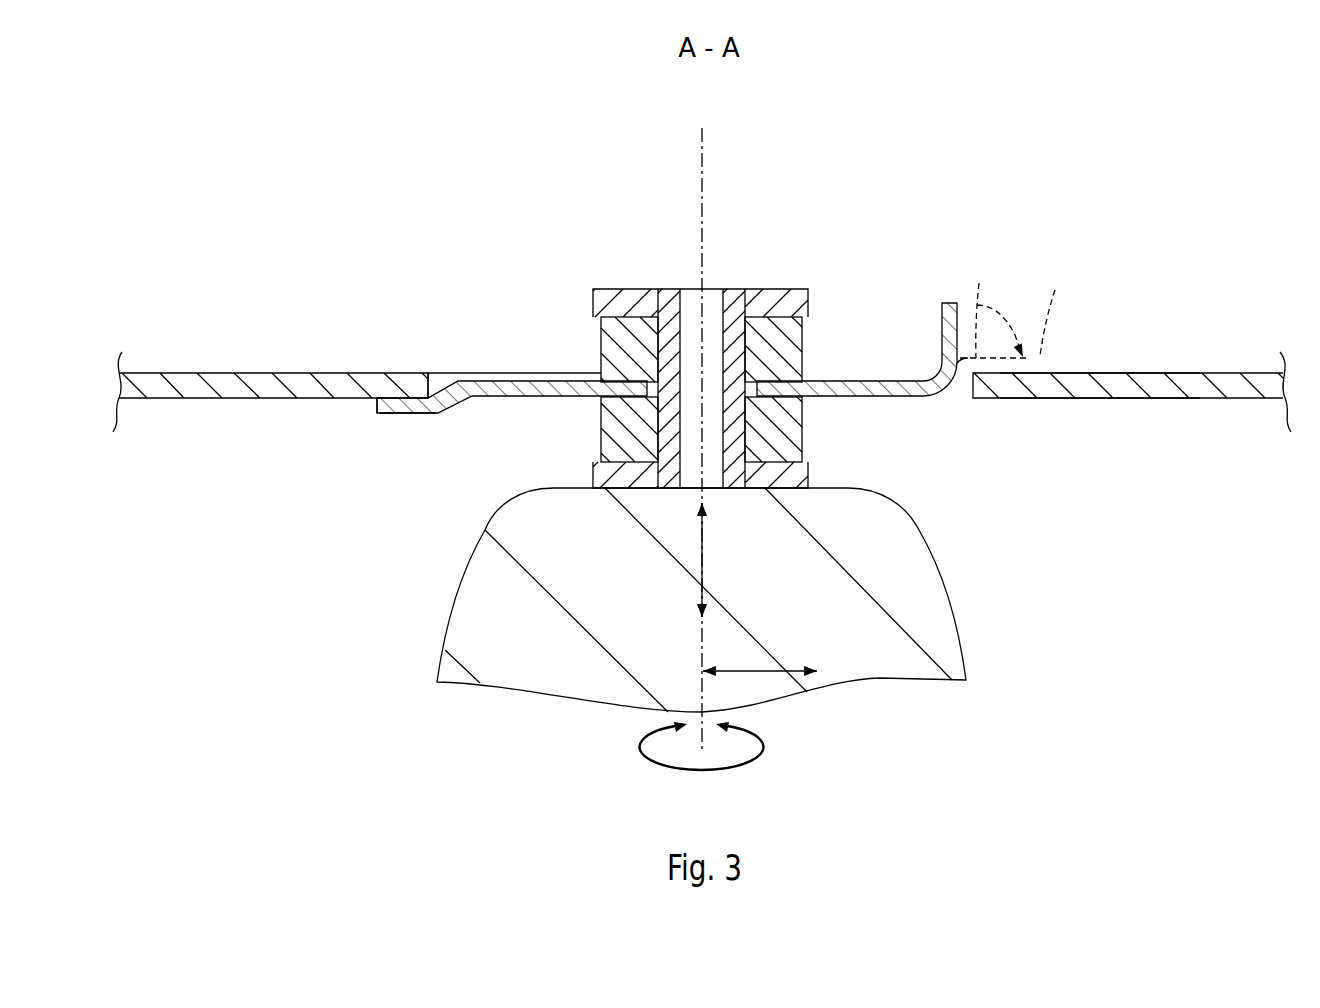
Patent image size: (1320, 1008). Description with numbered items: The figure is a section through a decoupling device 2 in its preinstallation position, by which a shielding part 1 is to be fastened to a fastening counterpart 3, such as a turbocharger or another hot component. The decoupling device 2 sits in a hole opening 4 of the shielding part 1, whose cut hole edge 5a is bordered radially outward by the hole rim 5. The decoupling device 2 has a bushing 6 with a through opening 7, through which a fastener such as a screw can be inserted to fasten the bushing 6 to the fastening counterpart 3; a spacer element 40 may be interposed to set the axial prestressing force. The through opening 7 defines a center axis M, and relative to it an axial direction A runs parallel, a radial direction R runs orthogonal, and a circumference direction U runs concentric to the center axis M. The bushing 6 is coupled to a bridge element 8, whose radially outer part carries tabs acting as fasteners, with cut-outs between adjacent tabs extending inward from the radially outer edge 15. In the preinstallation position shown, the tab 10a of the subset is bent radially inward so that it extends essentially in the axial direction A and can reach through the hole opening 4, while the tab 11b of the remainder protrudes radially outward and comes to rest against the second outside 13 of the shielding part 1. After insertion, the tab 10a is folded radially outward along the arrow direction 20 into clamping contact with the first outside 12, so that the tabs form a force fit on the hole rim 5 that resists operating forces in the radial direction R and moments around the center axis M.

The shielding part 1 is at (1224, 380).
The decoupling device 2 is at (856, 250).
The fastening counterpart 3 is at (935, 603).
The hole opening 4 is at (953, 414).
The hole rim 5 is at (384, 365).
The cut hole edge 5a is at (434, 385).
The bushing 6 is at (620, 293).
The through opening 7 is at (713, 298).
The bridge element 8 is at (480, 392).
The tab 10a is at (992, 307).
The tab 11b is at (405, 415).
The first outside 12 is at (1112, 371).
The second outside 13 is at (1112, 400).
The radially outer edge 15 is at (377, 406).
The arrow direction 20 is at (1010, 320).
The spacer element 40 is at (772, 322).
The axial direction A is at (705, 560).
The radial direction R is at (755, 668).
The circumference direction U is at (765, 747).
The center axis M is at (705, 143).